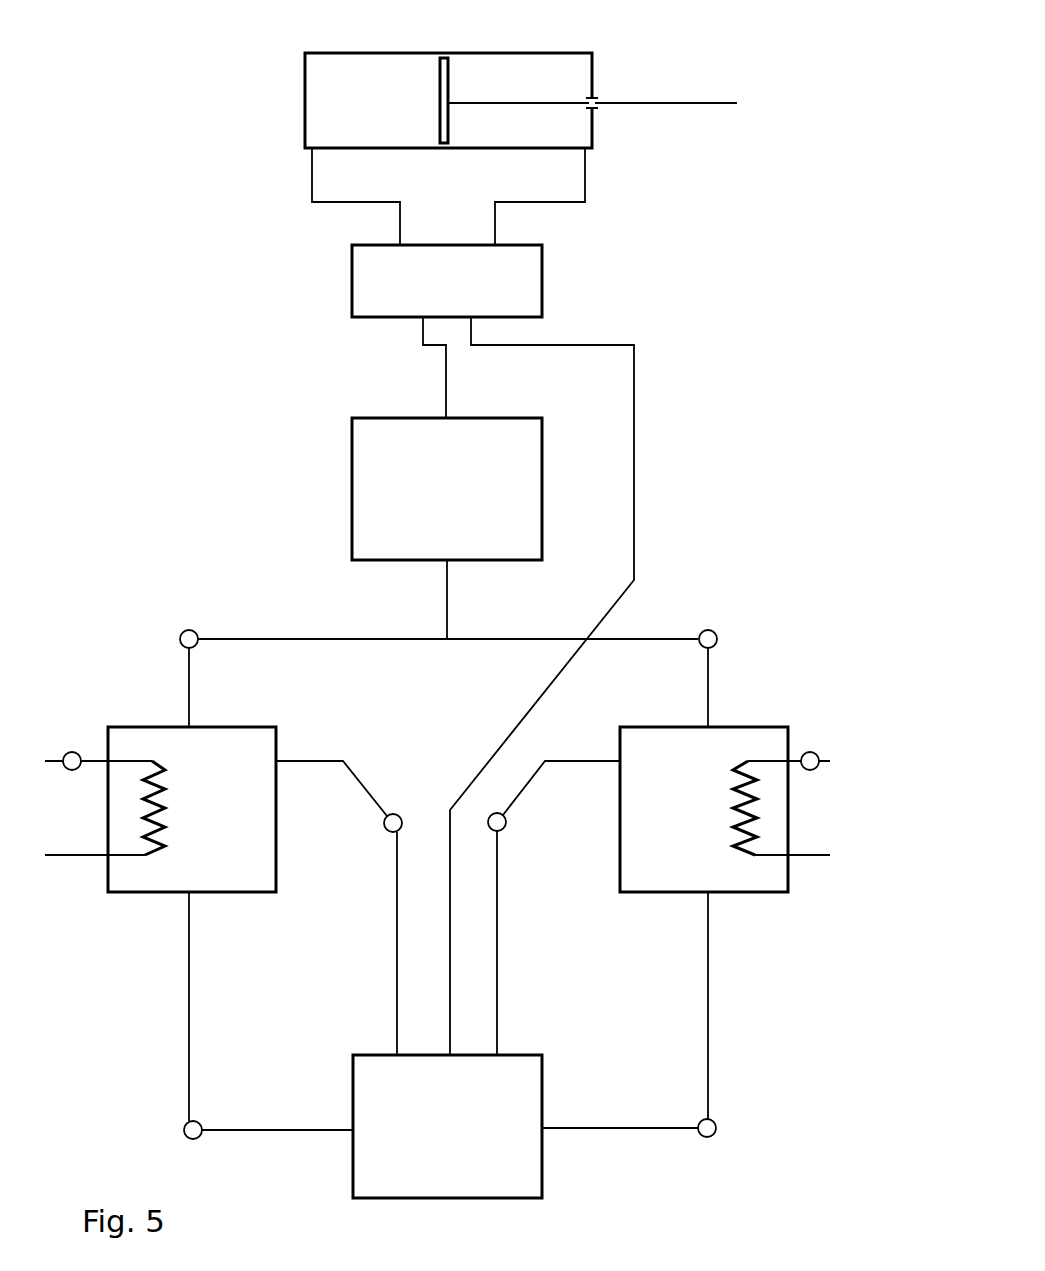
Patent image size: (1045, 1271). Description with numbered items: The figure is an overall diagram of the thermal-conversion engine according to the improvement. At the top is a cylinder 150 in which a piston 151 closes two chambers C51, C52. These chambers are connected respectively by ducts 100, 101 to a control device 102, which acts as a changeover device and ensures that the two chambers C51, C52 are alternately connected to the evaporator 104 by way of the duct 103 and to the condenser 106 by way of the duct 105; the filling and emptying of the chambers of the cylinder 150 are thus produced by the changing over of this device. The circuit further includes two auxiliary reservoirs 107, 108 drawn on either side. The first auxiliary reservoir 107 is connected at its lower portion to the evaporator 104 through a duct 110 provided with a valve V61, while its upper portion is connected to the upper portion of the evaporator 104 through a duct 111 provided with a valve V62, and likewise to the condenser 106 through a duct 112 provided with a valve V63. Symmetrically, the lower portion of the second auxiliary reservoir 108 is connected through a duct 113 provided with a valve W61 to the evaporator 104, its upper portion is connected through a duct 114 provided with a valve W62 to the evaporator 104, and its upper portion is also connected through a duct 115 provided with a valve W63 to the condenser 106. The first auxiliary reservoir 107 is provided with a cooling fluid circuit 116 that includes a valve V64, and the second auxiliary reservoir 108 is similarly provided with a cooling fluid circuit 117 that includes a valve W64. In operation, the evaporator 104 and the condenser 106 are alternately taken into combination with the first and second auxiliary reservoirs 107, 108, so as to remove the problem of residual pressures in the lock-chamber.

The cylinder 150 is at (393, 53).
The piston 151 is at (448, 70).
The chamber C51 is at (325, 80).
The chamber C52 is at (523, 73).
The duct 100 is at (312, 182).
The duct 101 is at (585, 185).
The control device 102 is at (543, 268).
The duct 103 is at (555, 343).
The duct 105 is at (423, 335).
The condenser 106 is at (370, 476).
The first auxiliary reservoir 107 is at (177, 745).
The second auxiliary reservoir 108 is at (708, 743).
The duct 110 is at (189, 1000).
The duct 111 is at (397, 960).
The duct 112 is at (297, 639).
The duct 113 is at (708, 980).
The duct 114 is at (497, 980).
The duct 115 is at (630, 639).
The cooling fluid circuit 116 is at (92, 860).
The cooling fluid circuit 117 is at (812, 860).
The evaporator 104 is at (407, 1110).
The valve V61 is at (185, 1125).
The valve V62 is at (390, 832).
The valve V63 is at (184, 632).
The valve V64 is at (78, 747).
The valve W61 is at (717, 1122).
The valve W62 is at (500, 832).
The valve W63 is at (717, 632).
The valve W64 is at (815, 747).